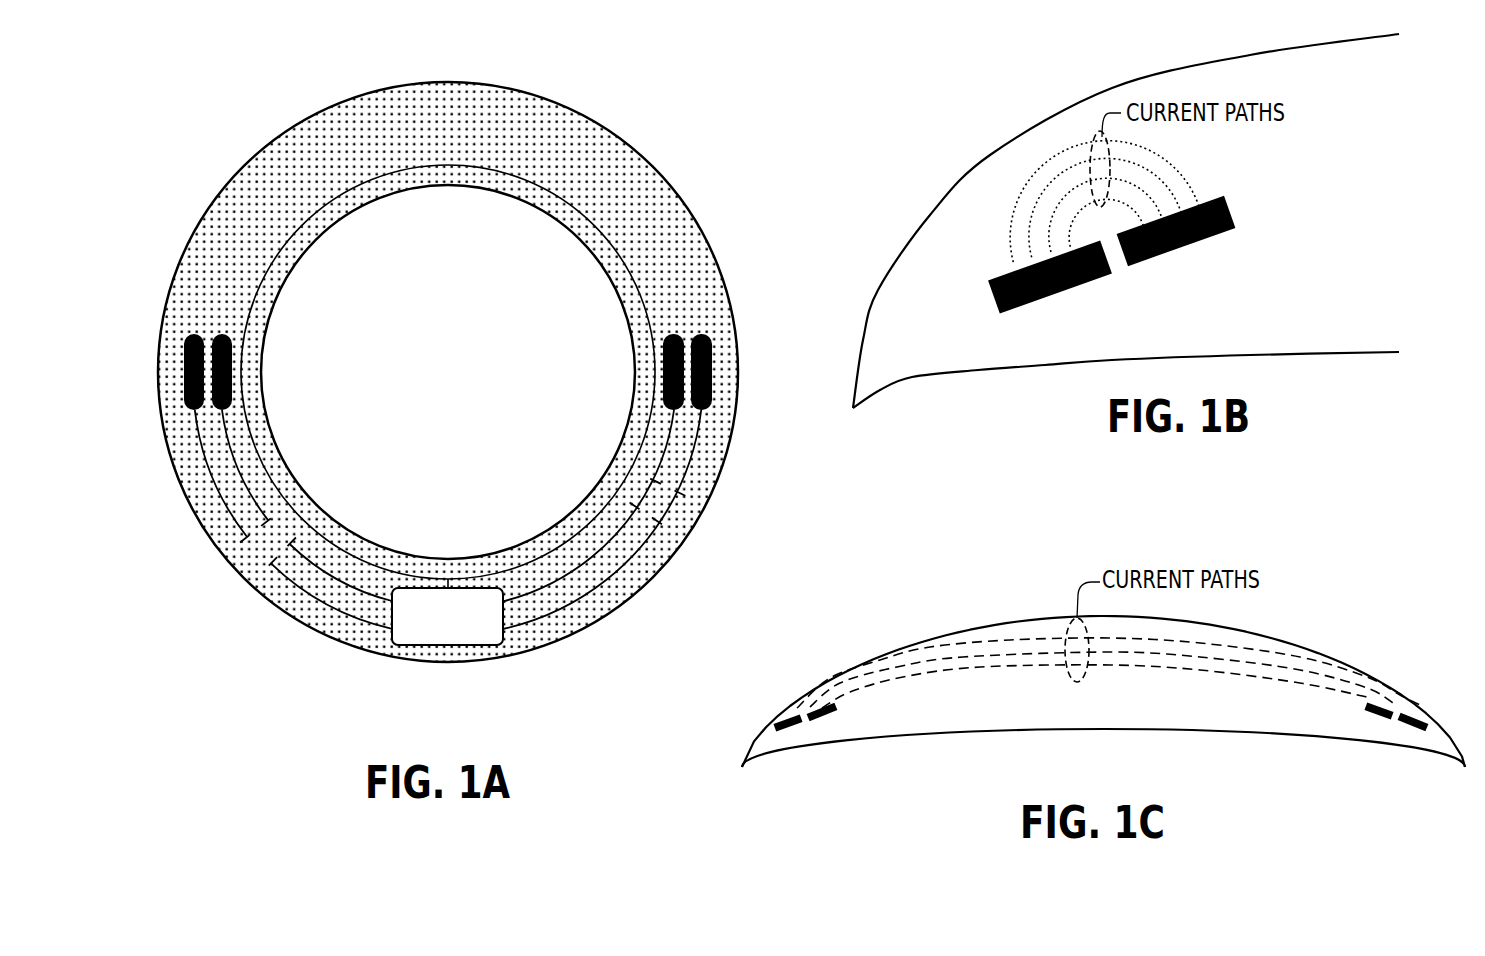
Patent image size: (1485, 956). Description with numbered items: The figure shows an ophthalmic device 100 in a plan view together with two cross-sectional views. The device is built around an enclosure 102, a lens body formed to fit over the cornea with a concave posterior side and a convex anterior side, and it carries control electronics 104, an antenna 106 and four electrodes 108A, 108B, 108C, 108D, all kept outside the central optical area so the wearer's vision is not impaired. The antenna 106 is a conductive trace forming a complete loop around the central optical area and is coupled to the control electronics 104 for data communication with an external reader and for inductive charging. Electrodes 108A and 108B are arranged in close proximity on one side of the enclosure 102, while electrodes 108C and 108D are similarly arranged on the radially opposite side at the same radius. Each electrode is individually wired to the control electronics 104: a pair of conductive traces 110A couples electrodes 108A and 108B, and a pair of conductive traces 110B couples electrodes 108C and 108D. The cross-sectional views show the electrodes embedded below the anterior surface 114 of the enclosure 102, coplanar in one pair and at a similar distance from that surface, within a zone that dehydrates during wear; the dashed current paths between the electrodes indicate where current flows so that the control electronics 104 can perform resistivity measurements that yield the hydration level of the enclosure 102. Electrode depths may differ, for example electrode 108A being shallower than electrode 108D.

In FIG. 1A, the ophthalmic device 100 is at (453, 395).
In FIG. 1A, the enclosure 102 is at (580, 110).
In FIG. 1B, the enclosure 102 is at (1126, 221).
In FIG. 1C, the enclosure 102 is at (912, 644).
In FIG. 1A, the control electronics 104 is at (447, 612).
In FIG. 1A, the antenna 106 is at (551, 556).
In FIG. 1A, the electrode 108A is at (186, 389).
In FIG. 1B, the electrode 108A is at (1058, 295).
In FIG. 1C, the electrode 108A is at (790, 732).
In FIG. 1A, the electrode 108B is at (222, 334).
In FIG. 1B, the electrode 108B is at (1182, 247).
In FIG. 1C, the electrode 108B is at (822, 718).
In FIG. 1A, the electrode 108C is at (713, 405).
In FIG. 1C, the electrode 108C is at (1412, 727).
In FIG. 1A, the electrode 108D is at (674, 333).
In FIG. 1C, the electrode 108D is at (1377, 717).
In FIG. 1A, the pair of conductive traces 110A is at (240, 556).
In FIG. 1A, the pair of conductive traces 110B is at (688, 514).
In FIG. 1B, the anterior surface 114 is at (978, 156).